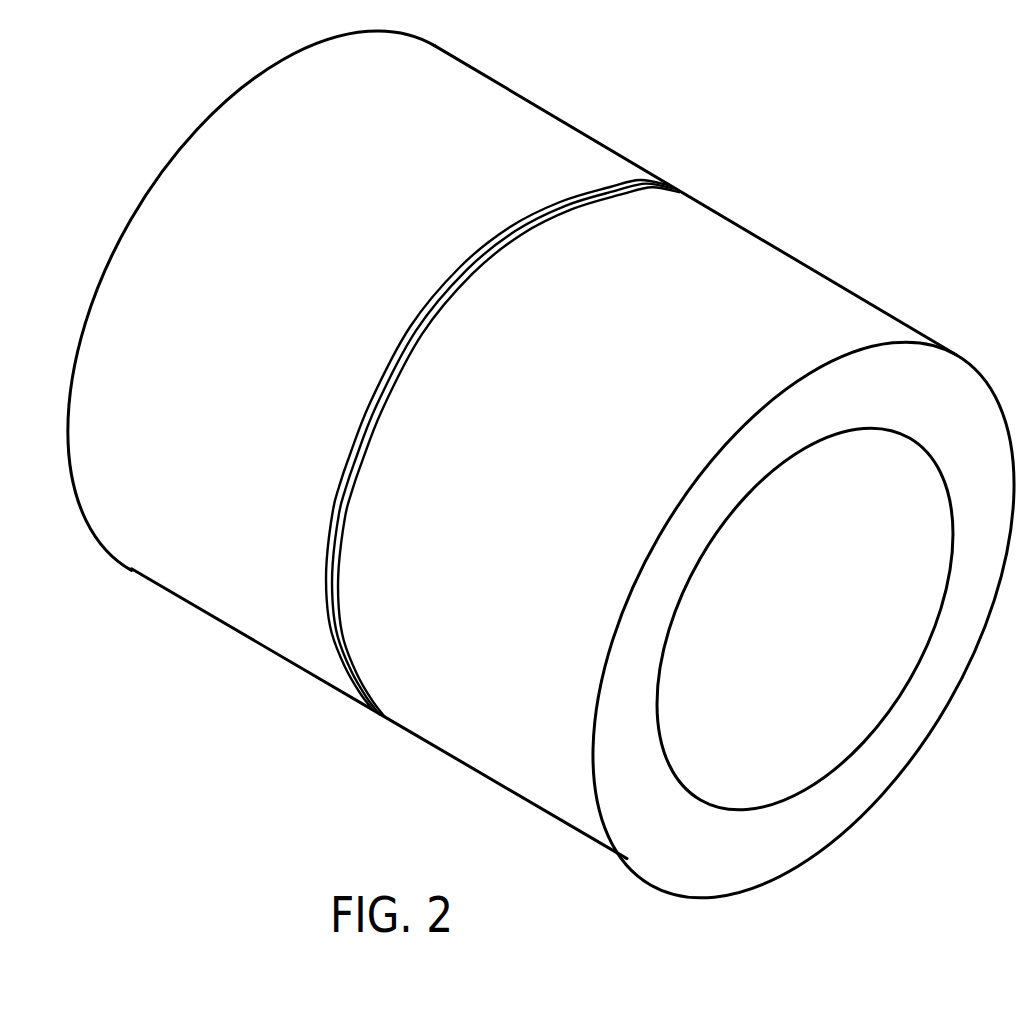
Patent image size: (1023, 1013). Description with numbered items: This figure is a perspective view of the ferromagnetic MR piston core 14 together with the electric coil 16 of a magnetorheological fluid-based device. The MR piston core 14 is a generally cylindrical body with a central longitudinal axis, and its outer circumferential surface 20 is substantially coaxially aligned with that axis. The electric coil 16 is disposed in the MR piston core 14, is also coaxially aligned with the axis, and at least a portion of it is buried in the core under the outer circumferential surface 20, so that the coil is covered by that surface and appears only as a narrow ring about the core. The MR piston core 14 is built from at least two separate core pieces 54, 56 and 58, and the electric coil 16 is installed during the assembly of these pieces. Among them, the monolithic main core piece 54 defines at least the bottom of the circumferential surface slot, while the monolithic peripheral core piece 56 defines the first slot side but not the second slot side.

The MR piston core 14 is at (545, 500).
The electric coil 16 is at (382, 413).
The outer circumferential surface 20 is at (517, 97).
The monolithic main core piece 54 is at (878, 686).
The monolithic peripheral core piece 56 is at (208, 598).
The separate core piece 58 is at (492, 766).